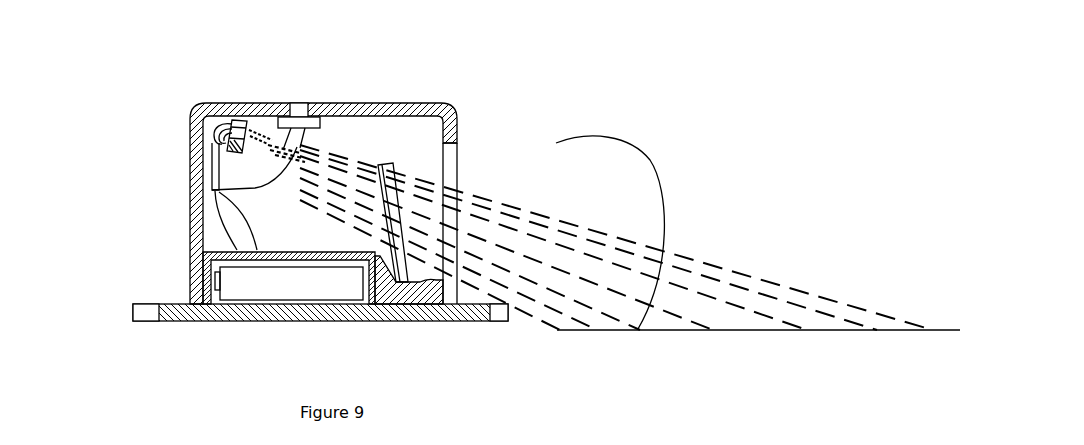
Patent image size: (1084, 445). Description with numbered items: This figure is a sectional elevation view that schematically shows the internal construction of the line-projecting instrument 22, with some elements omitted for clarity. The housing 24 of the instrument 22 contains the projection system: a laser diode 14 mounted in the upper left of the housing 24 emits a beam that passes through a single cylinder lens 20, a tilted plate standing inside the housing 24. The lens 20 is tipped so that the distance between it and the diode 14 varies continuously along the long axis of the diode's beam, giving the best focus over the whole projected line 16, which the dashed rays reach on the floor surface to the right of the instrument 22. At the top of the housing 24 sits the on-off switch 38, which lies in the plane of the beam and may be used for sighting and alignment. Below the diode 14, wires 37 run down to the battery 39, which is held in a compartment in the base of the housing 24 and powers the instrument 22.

The instrument 22 is at (134, 95).
The laser diode 14 is at (236, 119).
The on-off switch 38 is at (300, 103).
The housing 24 is at (365, 104).
The cylinder lens 20 is at (393, 163).
The line 16 is at (595, 232).
The wires 37 is at (238, 207).
The battery 39 is at (220, 272).